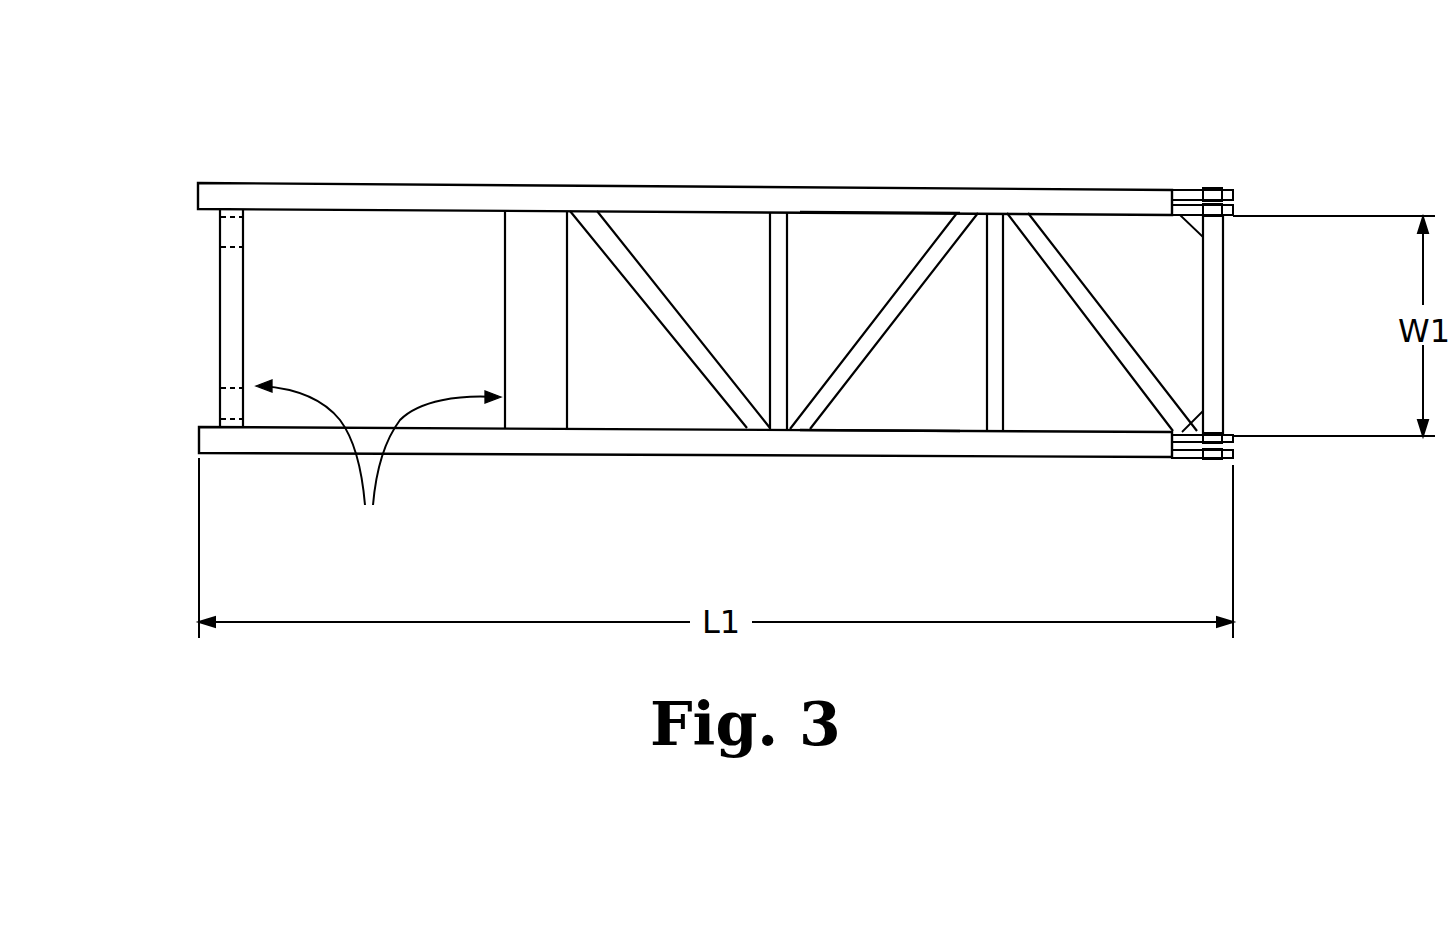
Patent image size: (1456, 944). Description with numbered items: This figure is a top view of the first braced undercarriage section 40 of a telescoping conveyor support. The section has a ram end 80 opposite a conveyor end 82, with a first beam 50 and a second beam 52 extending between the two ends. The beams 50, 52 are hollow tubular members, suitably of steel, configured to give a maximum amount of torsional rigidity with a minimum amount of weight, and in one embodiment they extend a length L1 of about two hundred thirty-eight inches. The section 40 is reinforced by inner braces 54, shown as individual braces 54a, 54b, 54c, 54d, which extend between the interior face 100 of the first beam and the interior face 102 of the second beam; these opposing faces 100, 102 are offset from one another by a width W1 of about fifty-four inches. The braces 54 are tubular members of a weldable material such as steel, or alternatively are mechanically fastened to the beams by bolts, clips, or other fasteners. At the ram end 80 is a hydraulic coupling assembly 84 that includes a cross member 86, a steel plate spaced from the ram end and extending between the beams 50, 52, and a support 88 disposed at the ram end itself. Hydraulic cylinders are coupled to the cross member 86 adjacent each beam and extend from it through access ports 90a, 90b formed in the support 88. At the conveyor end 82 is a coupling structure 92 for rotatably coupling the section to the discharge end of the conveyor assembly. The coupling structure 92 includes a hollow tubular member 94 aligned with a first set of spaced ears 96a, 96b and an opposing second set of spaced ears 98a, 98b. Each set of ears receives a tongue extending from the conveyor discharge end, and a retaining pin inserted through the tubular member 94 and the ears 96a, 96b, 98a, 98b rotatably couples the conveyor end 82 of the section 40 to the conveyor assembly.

The first braced undercarriage section 40 is at (640, 112).
The first beam 50 is at (905, 190).
The second beam 52 is at (900, 458).
The inner braces 54 is at (882, 321).
The inner brace 54a is at (779, 294).
The inner brace 54b is at (875, 335).
The inner brace 54c is at (995, 368).
The inner brace 54d is at (1085, 300).
The ram end 80 is at (168, 261).
The conveyor end 82 is at (1254, 294).
The hydraulic coupling assembly 84 is at (378, 466).
The cross member 86 is at (530, 320).
The support 88 is at (228, 328).
The access port 90a is at (225, 232).
The access port 90b is at (226, 404).
The coupling structure 92 is at (1253, 144).
The tubular member 94 is at (1213, 355).
The ear 96a is at (1232, 200).
The ear 96b is at (1232, 212).
The ear 98a is at (1230, 456).
The ear 98b is at (1230, 434).
The interior face 100 is at (882, 216).
The interior face 102 is at (925, 432).